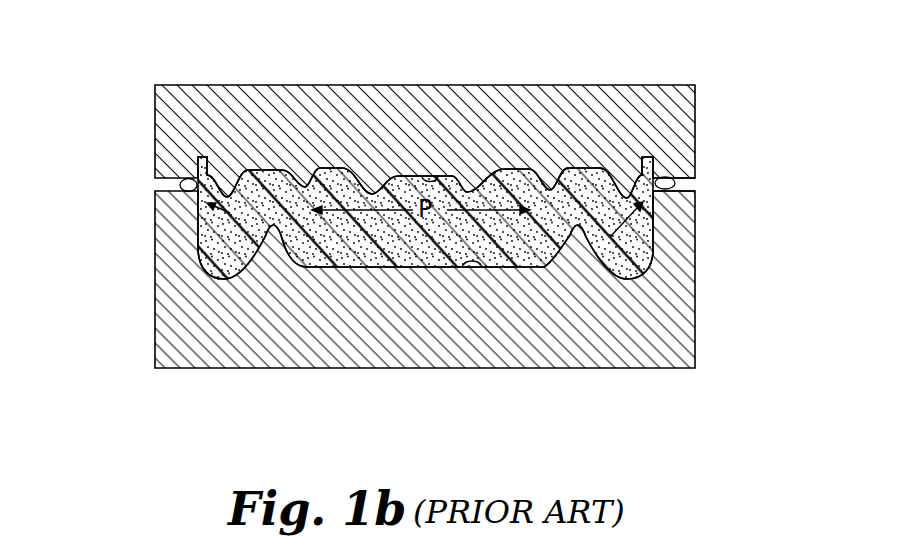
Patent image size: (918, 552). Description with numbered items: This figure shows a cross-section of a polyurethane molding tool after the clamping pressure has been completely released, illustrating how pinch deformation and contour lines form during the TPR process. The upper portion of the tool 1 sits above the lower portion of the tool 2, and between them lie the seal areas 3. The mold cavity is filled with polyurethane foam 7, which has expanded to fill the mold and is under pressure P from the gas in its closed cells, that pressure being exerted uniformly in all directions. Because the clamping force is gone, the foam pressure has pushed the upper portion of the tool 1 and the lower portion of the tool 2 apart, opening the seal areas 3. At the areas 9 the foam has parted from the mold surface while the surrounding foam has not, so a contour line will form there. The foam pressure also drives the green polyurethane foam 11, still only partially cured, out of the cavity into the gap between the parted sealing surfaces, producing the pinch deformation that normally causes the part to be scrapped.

The upper portion of the tool 1 is at (683, 108).
The lower portion of the tool 2 is at (683, 305).
The seal areas 3 is at (685, 182).
The polyurethane foam 7 is at (346, 255).
The areas where the polyurethane foam has parted from the mold surface 9 is at (434, 178).
The green polyurethane foam exuding from the mold cavity 11 is at (180, 184).